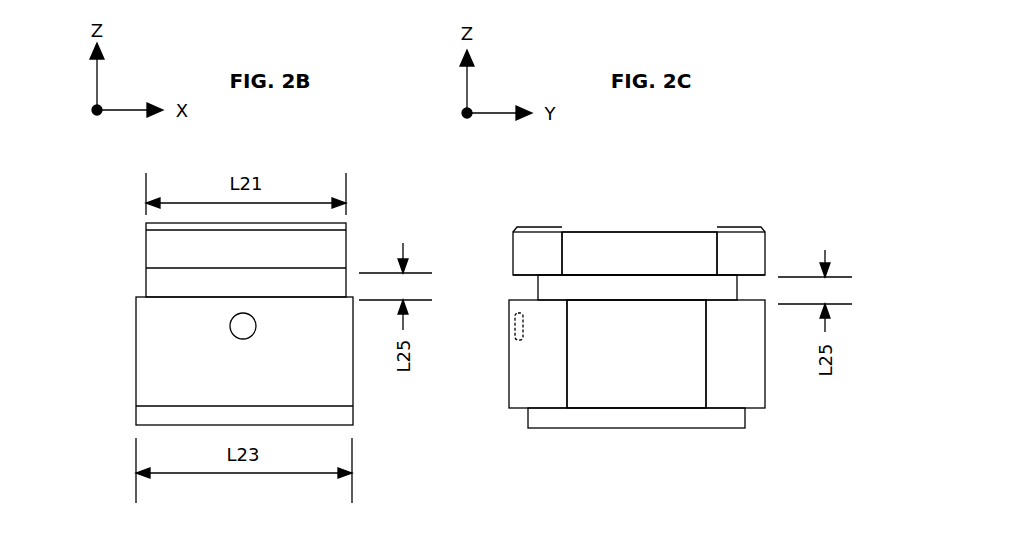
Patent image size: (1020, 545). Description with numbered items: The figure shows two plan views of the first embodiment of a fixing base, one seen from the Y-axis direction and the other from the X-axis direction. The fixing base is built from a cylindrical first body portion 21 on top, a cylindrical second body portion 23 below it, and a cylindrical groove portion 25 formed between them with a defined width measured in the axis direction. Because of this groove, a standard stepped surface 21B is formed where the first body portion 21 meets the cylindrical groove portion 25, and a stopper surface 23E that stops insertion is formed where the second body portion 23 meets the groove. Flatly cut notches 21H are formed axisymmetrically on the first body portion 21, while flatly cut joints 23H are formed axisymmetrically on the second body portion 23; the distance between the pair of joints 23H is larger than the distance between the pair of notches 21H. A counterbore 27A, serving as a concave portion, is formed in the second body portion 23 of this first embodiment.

In FIG. 2B, the first body portion 21 is at (246, 260).
In FIG. 2C, the first body portion 21 is at (767, 253).
In FIG. 2C, the standard stepped surface 21B is at (515, 275).
In FIG. 2C, the notches 21H is at (657, 253).
In FIG. 2C, the second body portion 23 is at (767, 385).
In FIG. 2B, the stopper surface 23E is at (136, 297).
In FIG. 2C, the joints 23H is at (660, 393).
In FIG. 2C, the cylindrical groove portion 25 is at (738, 291).
In FIG. 2B, the counterbore 27A is at (230, 327).
In FIG. 2C, the counterbore 27A is at (509, 330).